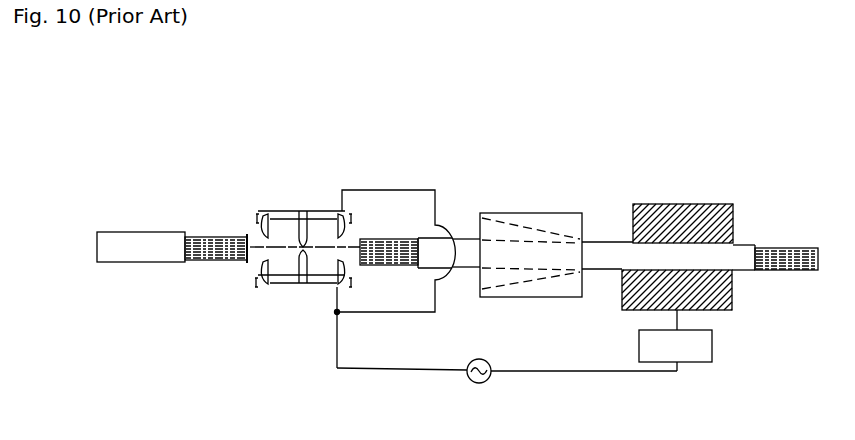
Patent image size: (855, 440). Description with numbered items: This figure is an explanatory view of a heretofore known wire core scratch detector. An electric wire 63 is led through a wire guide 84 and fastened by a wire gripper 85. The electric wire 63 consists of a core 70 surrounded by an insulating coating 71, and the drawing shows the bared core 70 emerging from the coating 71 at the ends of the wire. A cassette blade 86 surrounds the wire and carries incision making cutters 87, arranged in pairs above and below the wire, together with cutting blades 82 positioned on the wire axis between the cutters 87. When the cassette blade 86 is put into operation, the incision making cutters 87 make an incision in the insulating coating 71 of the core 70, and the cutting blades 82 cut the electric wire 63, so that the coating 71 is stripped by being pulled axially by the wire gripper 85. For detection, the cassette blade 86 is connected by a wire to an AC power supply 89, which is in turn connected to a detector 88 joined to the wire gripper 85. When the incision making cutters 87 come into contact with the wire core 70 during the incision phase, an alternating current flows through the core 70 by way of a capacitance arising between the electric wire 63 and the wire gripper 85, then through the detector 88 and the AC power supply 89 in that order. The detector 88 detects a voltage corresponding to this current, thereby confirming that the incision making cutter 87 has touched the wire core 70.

The electric wire 63 is at (118, 232).
The core 70 is at (208, 260).
The insulating coating 71 is at (160, 232).
The cutting blades 82 is at (306, 213).
The wire guide 84 is at (532, 213).
The wire gripper 85 is at (662, 210).
The cassette blade 86 is at (257, 212).
The incision making cutters 87 is at (270, 213).
The detector 88 is at (705, 362).
The AC power supply 89 is at (490, 359).